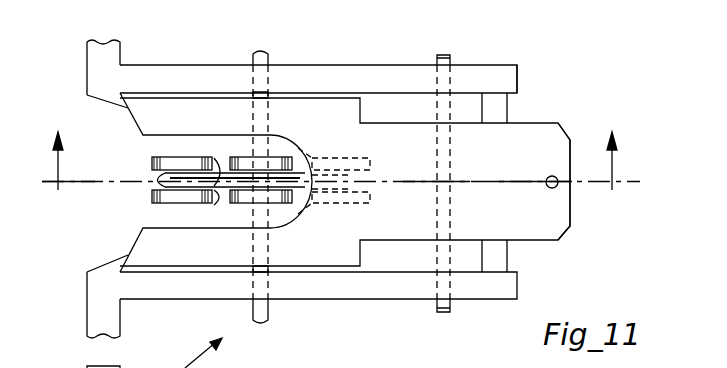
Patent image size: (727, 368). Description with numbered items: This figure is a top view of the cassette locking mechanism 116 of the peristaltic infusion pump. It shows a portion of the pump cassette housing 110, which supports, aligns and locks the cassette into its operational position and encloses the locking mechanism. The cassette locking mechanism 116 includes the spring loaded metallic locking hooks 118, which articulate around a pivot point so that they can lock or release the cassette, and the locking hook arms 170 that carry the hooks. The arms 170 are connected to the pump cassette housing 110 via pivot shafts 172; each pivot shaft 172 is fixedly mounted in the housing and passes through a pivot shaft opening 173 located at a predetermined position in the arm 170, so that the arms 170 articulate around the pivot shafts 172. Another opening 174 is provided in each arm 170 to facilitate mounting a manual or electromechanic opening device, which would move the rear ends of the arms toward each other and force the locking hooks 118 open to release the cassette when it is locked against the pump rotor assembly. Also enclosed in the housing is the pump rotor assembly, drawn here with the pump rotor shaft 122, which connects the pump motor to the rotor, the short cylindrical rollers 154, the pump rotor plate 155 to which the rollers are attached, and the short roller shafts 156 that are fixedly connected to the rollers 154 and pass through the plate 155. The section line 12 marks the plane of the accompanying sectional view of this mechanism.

The section line 12- 12 is at (337, 170).
The pump cassette housing 110 is at (87, 79).
The cassette locking mechanism 116 is at (523, 85).
The locking hooks 118 is at (140, 118).
The pump rotor shaft 122 is at (253, 56).
The rollers 154 is at (152, 165).
The pump rotor plate 155 is at (232, 200).
The roller shafts 156 is at (160, 184).
The locking hook arms 170 is at (520, 165).
The pivot shafts 172 is at (440, 55).
The pivot shaft opening 173 is at (452, 62).
The opening 174 is at (551, 189).